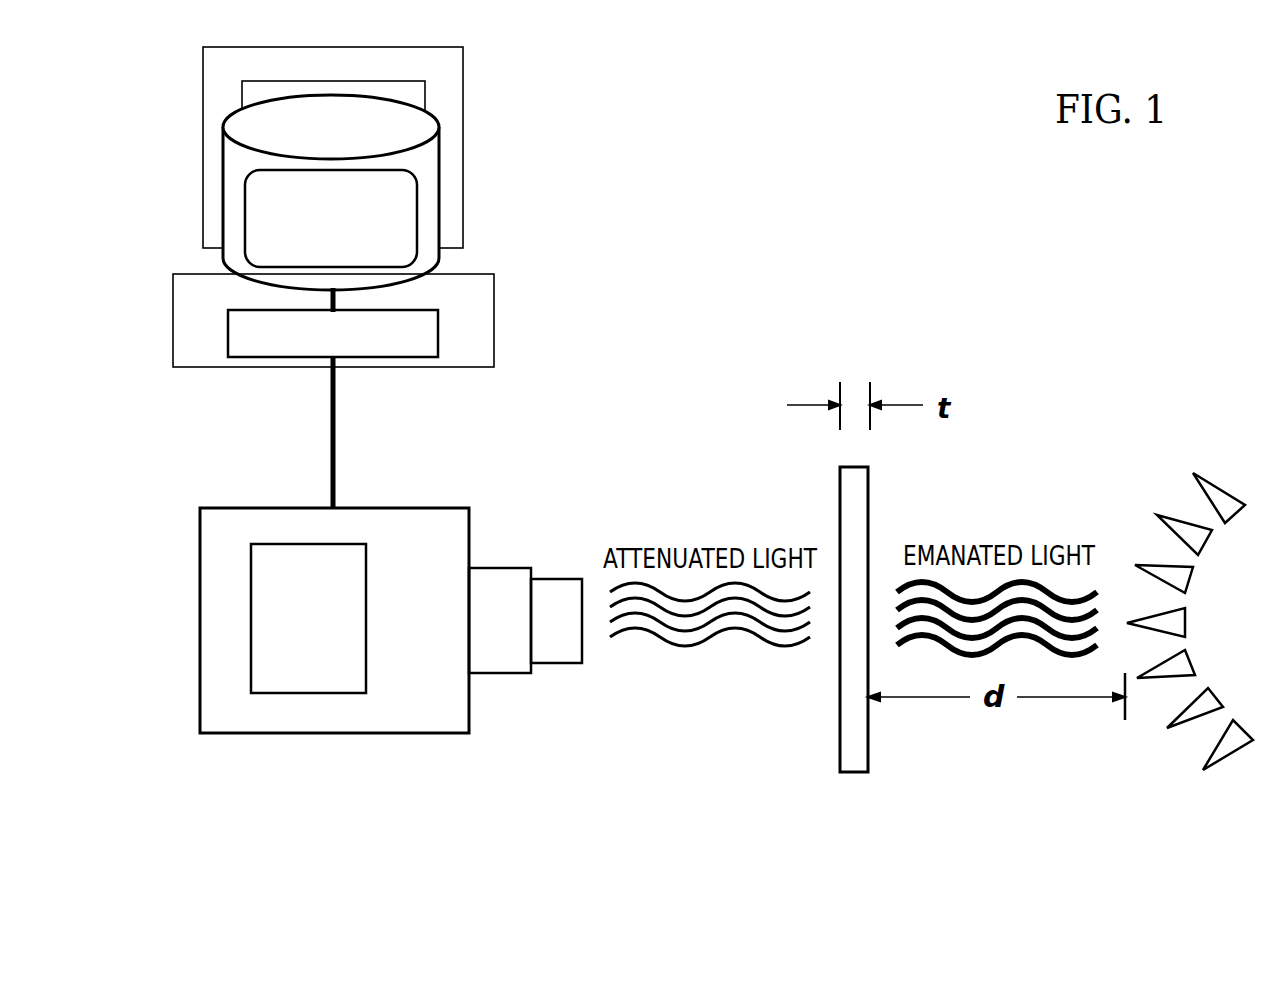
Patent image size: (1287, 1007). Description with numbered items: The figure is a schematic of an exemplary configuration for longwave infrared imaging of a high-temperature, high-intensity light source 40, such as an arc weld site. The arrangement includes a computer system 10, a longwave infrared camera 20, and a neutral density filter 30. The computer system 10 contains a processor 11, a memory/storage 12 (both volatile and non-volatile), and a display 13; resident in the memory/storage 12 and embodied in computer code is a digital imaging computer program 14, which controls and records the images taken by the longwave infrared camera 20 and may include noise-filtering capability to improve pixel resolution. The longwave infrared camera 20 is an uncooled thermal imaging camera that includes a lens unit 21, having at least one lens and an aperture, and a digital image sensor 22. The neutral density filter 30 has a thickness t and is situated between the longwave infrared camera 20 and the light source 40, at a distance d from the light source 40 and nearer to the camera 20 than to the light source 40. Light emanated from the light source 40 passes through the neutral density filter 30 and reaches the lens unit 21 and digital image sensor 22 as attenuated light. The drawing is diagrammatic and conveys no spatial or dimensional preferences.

The computer system 10 is at (537, 48).
The processor 11 is at (333, 320).
The memory/storage 12 is at (331, 192).
The display 13 is at (333, 147).
The digital imaging computer program 14 is at (331, 218).
The longwave infrared camera 20 is at (580, 767).
The lens unit 21 is at (558, 557).
The digital image sensor 22 is at (308, 618).
The neutral density filter 30 is at (948, 808).
The high-intensity light source 40 is at (1172, 462).